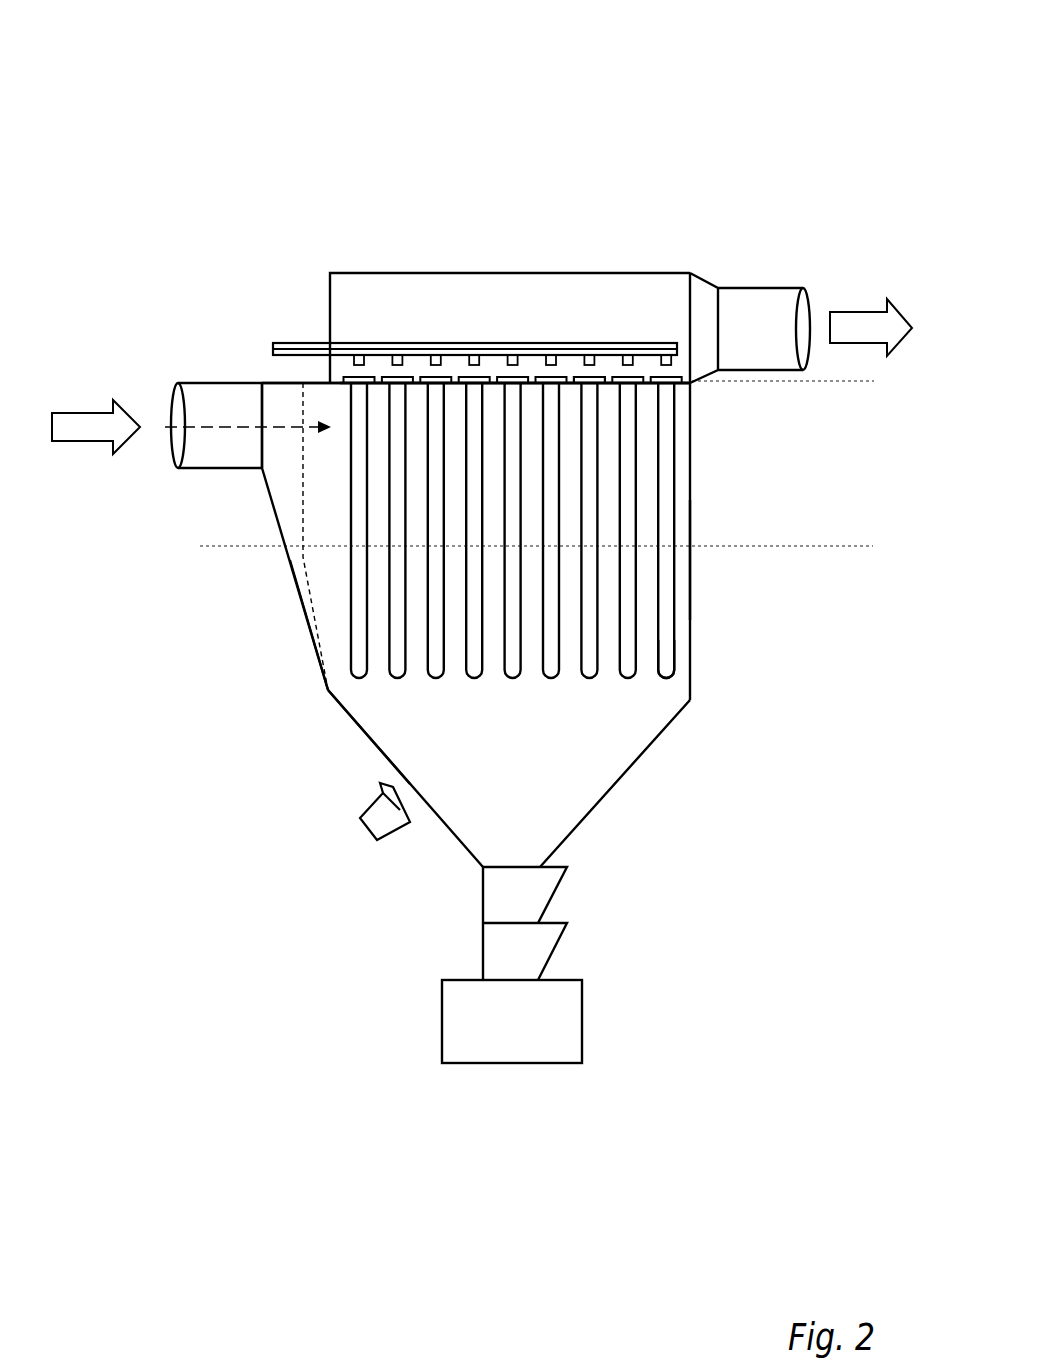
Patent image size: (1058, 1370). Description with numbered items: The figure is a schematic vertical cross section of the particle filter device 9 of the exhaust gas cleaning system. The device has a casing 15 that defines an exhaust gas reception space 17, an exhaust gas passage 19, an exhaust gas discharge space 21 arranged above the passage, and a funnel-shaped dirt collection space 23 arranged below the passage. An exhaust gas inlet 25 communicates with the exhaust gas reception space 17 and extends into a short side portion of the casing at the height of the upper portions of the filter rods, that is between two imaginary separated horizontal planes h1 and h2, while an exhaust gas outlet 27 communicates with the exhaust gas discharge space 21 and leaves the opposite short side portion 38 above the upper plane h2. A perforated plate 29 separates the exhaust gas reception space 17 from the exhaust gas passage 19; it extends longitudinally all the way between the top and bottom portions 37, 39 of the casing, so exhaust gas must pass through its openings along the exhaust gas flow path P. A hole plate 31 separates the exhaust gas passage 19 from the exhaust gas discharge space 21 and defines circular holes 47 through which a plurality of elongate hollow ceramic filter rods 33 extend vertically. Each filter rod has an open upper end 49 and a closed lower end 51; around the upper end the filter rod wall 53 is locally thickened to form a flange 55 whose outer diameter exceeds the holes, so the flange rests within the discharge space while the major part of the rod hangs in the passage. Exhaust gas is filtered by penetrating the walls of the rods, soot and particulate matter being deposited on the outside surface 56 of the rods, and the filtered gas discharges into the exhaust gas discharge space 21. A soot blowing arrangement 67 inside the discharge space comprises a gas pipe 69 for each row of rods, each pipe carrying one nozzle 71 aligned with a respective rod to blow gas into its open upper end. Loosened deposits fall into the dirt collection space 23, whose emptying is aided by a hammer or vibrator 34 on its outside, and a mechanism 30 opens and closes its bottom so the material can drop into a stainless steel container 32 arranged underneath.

The particle filter device 9 is at (842, 153).
The casing 15 is at (692, 483).
The exhaust gas reception space 17 is at (283, 503).
The exhaust gas passage 19 is at (679, 592).
The exhaust gas discharge space 21 is at (368, 297).
The dirt collection space 23 is at (505, 795).
The exhaust gas inlet 25 is at (203, 407).
The exhaust gas outlet 27 is at (756, 312).
The perforated plate 29 is at (305, 567).
The mechanism for opening and closing 30 is at (523, 892).
The hole plate 31 is at (688, 378).
The container 32 is at (478, 1017).
The filter rods 33 is at (625, 663).
The hammer or vibrator 34 is at (307, 633).
The top portion 37 is at (268, 383).
The short side portion 38 is at (692, 558).
The bottom portion 39 is at (353, 725).
The holes 47 is at (673, 385).
The open upper end 49 is at (407, 380).
The closed lower end 51 is at (667, 680).
The filter rod wall 53 is at (512, 667).
The flange 55 is at (577, 377).
The outside surface 56 is at (437, 653).
The soot blowing arrangement 67 is at (492, 350).
The gas pipe 69 is at (305, 342).
The nozzle 71 is at (432, 365).
The exhaust gas flow path P is at (205, 428).
The imaginary horizontal plane h1 is at (855, 548).
The imaginary horizontal plane h2 is at (866, 381).